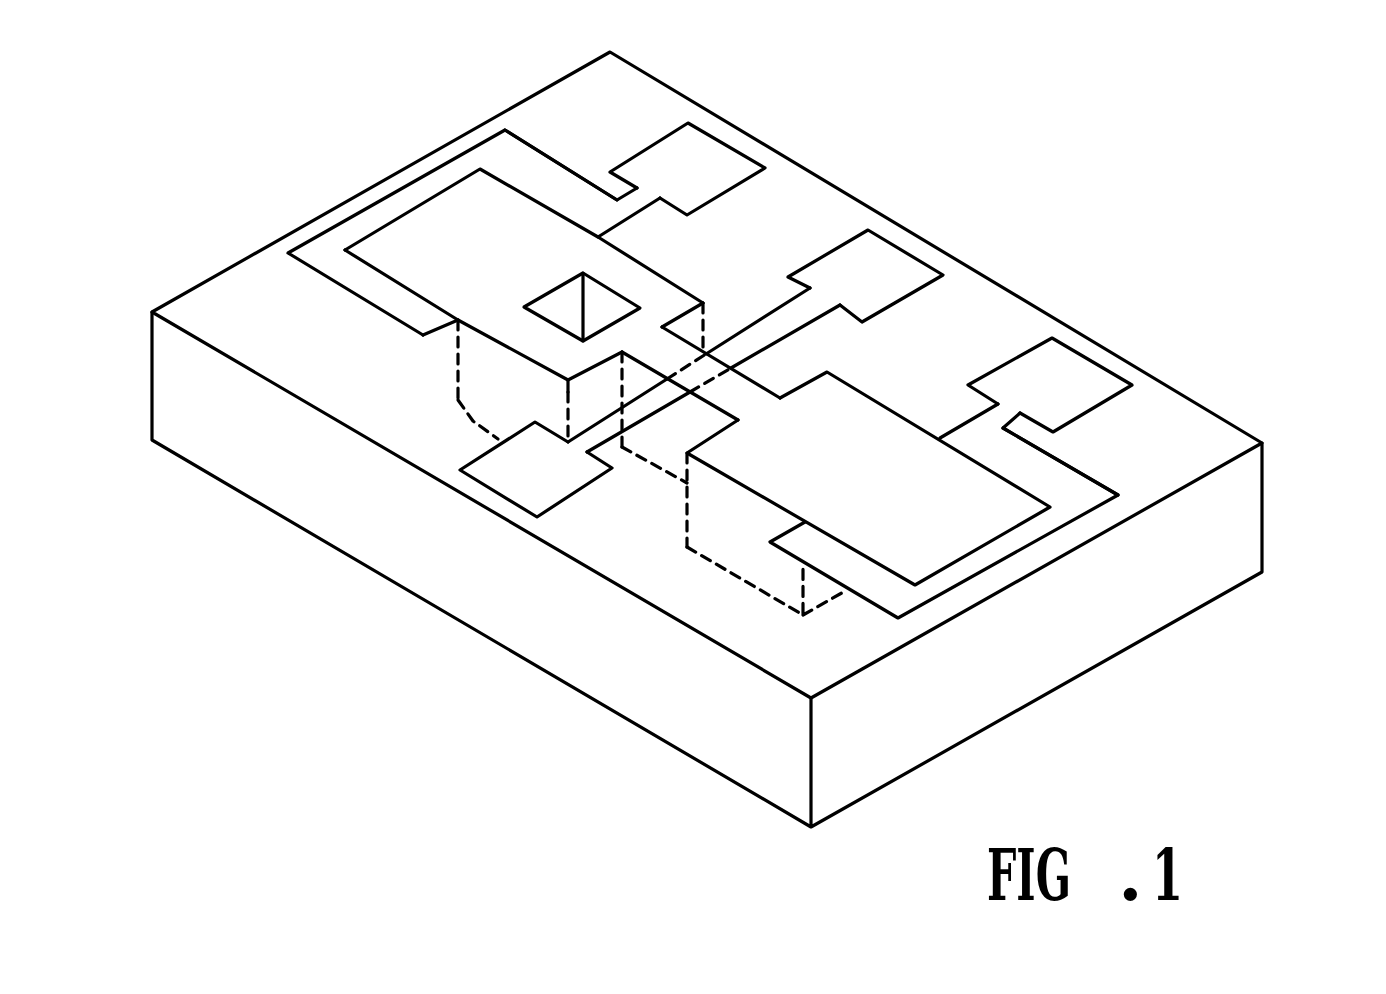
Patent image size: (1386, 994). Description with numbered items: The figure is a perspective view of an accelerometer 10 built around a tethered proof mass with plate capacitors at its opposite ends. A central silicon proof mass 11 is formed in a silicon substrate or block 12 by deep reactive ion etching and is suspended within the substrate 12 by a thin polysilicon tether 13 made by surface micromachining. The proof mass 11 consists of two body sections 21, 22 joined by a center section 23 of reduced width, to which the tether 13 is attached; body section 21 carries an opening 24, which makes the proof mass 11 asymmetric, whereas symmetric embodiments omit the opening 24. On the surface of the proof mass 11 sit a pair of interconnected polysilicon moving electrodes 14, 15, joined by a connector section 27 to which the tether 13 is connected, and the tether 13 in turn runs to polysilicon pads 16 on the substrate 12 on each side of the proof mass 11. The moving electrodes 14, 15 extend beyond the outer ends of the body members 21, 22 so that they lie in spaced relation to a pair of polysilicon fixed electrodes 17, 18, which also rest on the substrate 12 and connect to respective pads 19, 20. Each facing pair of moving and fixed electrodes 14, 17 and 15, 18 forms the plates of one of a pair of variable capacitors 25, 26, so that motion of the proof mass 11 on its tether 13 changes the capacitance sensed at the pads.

The accelerometer 10 is at (224, 144).
The proof mass 11 is at (385, 350).
The silicon substrate 12 is at (1243, 511).
The tether 13 is at (760, 327).
The moving electrode 14 is at (481, 259).
The moving electrode 15 is at (915, 515).
The pads 16 is at (890, 264).
The fixed electrode 17 is at (517, 158).
The fixed electrode 18 is at (1068, 482).
The pad 19 is at (727, 165).
The pad 20 is at (1078, 383).
The body section 21 is at (513, 393).
The body section 22 is at (785, 558).
The center section 23 is at (668, 446).
The opening 24 is at (565, 308).
The variable capacitor 25 is at (394, 133).
The variable capacitor 26 is at (1075, 585).
The connector section 27 is at (742, 398).